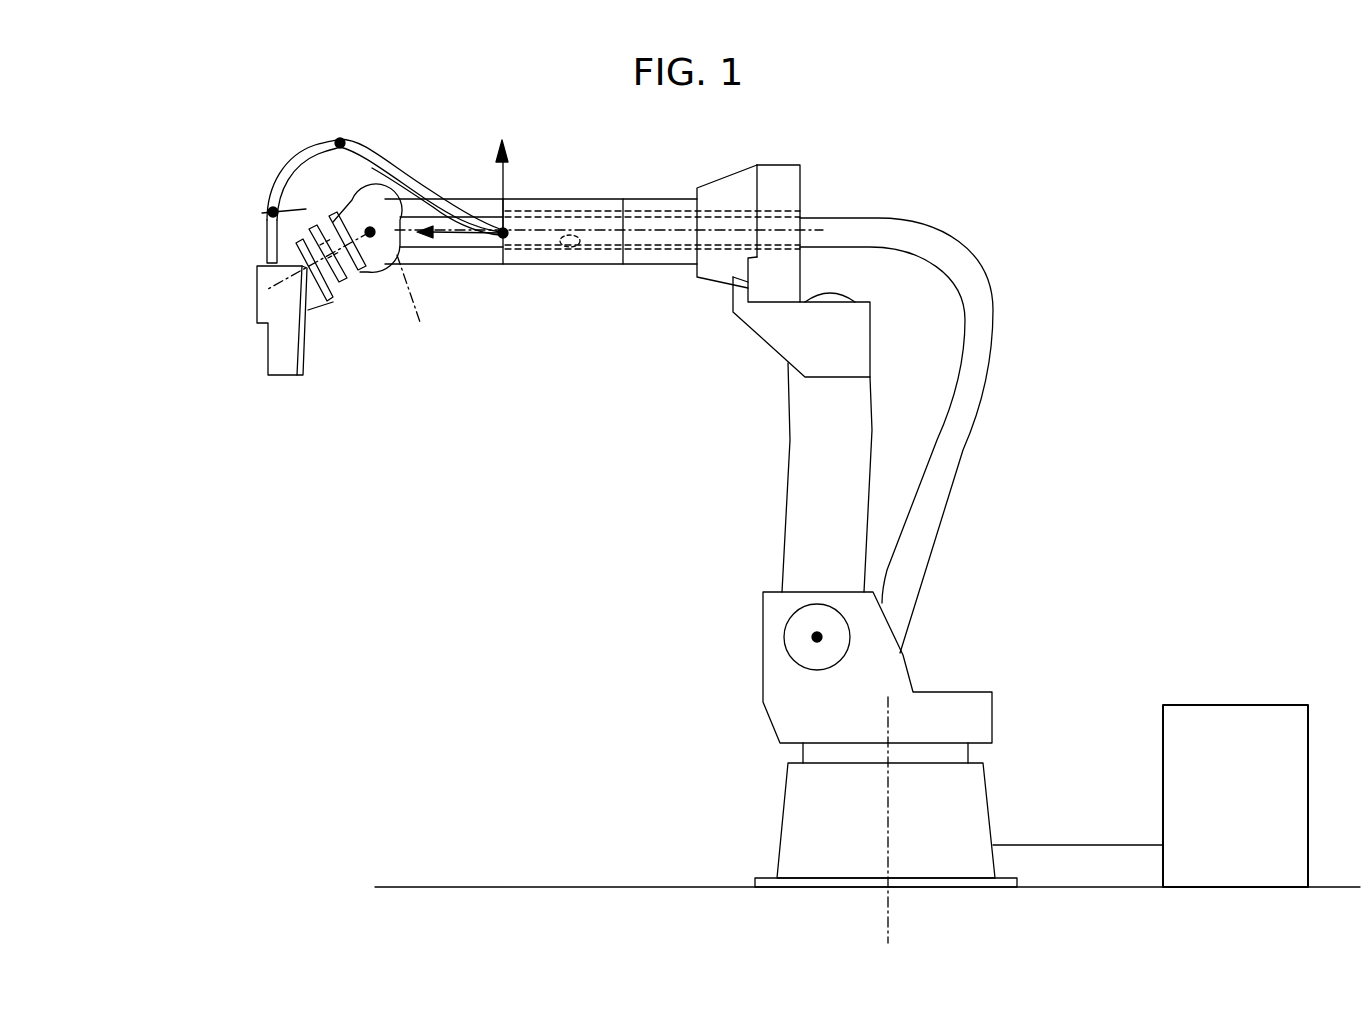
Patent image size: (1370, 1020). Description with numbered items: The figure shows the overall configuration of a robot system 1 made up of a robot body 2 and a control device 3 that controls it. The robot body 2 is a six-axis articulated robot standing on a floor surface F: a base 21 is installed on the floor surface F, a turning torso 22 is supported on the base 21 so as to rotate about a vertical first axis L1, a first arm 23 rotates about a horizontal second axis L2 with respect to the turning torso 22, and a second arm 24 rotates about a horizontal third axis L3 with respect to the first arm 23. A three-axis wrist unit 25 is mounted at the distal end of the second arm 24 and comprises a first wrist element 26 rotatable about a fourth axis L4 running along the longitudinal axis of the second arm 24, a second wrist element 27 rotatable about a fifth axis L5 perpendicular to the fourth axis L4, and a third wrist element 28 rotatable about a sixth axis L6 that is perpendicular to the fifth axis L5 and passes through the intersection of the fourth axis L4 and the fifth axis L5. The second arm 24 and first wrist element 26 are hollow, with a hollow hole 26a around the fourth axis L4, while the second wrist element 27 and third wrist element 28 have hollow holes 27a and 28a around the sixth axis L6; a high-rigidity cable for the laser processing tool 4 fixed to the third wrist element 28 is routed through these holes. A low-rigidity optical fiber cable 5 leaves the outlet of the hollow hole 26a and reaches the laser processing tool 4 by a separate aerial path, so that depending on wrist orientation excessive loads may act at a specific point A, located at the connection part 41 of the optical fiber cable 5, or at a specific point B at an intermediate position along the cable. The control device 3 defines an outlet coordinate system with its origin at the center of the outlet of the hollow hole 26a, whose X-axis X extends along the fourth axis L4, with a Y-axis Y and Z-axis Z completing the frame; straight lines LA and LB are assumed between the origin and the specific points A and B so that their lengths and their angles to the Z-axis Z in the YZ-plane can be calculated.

The robot system 1 is at (1207, 173).
The robot body 2 is at (977, 228).
The control device 3 is at (1225, 702).
The laser processing tool 4 is at (284, 377).
The connection part 41 is at (265, 242).
The optical fiber cable 5 is at (283, 160).
The base 21 is at (802, 823).
The turning torso 22 is at (977, 717).
The first arm 23 is at (797, 483).
The second arm 24 is at (650, 265).
The 3-axis wrist unit 25 is at (455, 265).
The first wrist element 26 is at (486, 266).
The hollow hole 26a is at (578, 250).
The second wrist element 27 is at (302, 207).
The hollow hole 27a is at (363, 205).
The third wrist element 28 is at (342, 285).
The hollow hole 28a is at (360, 282).
The first axis L1 is at (890, 913).
The second axis L2 is at (815, 637).
The third axis L3 is at (812, 230).
The fourth axis L4 is at (413, 300).
The fifth axis L5 is at (372, 236).
The sixth axis L6 is at (272, 290).
The straight line LA is at (303, 208).
The straight line LB is at (432, 192).
The specific point A is at (263, 214).
The specific point B is at (342, 130).
The X-axis X is at (453, 243).
The Y-axis Y is at (511, 231).
The Z-axis Z is at (503, 174).
The floor surface F is at (513, 885).